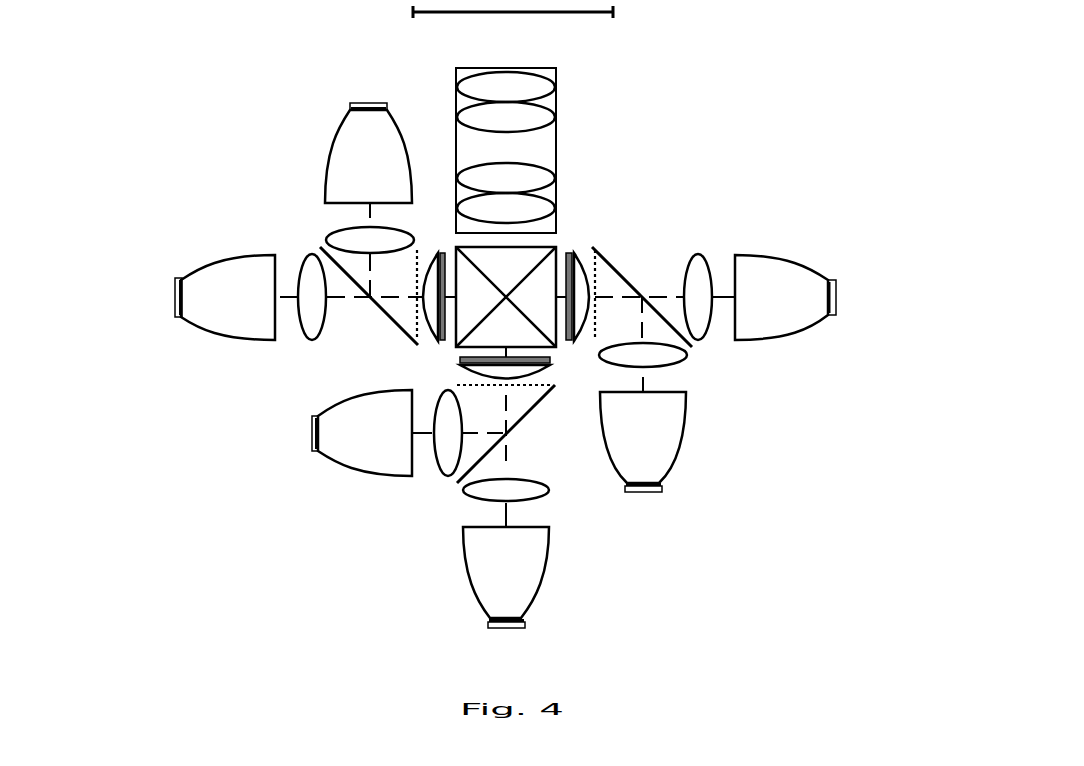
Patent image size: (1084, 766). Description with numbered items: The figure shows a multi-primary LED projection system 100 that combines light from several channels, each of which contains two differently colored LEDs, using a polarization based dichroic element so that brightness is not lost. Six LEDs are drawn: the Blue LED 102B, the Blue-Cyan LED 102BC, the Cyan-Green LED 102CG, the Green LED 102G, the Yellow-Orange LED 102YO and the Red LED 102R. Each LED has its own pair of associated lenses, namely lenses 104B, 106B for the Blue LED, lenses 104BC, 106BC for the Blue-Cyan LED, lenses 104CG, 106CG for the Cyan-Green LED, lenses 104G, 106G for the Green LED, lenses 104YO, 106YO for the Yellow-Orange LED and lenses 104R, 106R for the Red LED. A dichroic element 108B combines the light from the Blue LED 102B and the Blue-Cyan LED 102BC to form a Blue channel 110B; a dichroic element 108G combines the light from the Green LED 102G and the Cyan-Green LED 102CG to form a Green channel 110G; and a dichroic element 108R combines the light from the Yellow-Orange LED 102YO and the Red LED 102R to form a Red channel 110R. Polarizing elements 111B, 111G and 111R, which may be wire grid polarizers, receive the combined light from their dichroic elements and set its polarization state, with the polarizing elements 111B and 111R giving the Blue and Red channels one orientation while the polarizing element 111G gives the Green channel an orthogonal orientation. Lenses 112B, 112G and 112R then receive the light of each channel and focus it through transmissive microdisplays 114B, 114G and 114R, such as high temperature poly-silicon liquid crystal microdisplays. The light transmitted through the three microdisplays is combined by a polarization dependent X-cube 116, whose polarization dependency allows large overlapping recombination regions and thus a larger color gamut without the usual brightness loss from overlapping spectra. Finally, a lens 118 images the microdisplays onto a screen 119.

The multi-primary LED projection system 100 is at (683, 87).
The screen 119 is at (613, 12).
The lens 118 is at (556, 105).
The polarization dependent X-cube 116 is at (556, 247).
The Blue channel 110B is at (177, 178).
The Red channel 110R is at (712, 165).
The Green channel 110G is at (318, 637).
The Blue LED 102B is at (350, 106).
The lens 104B is at (328, 157).
The lens 106B is at (327, 237).
The dichroic element 108B is at (377, 305).
The polarizing element 111B is at (421, 250).
The lens 112B is at (428, 342).
The transmissive microdisplay 114B is at (438, 345).
The Blue-Cyan LED 102BC is at (178, 278).
The lens 104BC is at (207, 328).
The lens 106BC is at (308, 338).
The Red LED 102R is at (833, 278).
The lens 104R is at (787, 258).
The lens 106R is at (707, 257).
The dichroic element 108R is at (625, 278).
The polarizing element 111R is at (597, 324).
The lens 112R is at (580, 252).
The transmissive microdisplay 114R is at (568, 252).
The Yellow-Orange LED 102YO is at (662, 487).
The lens 104YO is at (682, 447).
The lens 106YO is at (675, 363).
The Green LED 102G is at (310, 447).
The lens 104G is at (357, 470).
The lens 106G is at (445, 477).
The dichroic element 108G is at (505, 445).
The polarizing element 111G is at (480, 388).
The lens 112G is at (510, 380).
The transmissive microdisplay 114G is at (537, 365).
The Cyan-Green LED 102CG is at (488, 624).
The lens 104CG is at (537, 600).
The lens 106CG is at (537, 498).